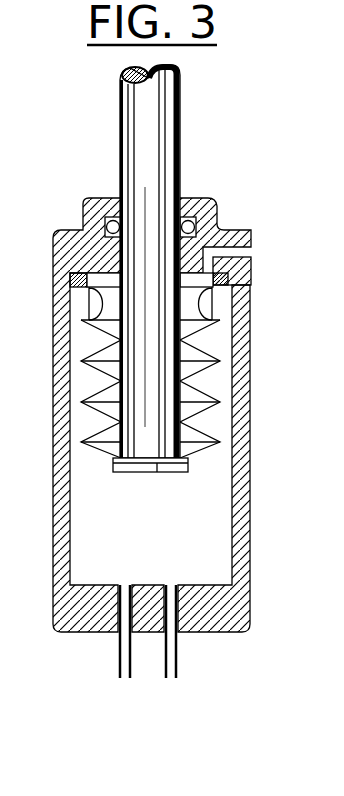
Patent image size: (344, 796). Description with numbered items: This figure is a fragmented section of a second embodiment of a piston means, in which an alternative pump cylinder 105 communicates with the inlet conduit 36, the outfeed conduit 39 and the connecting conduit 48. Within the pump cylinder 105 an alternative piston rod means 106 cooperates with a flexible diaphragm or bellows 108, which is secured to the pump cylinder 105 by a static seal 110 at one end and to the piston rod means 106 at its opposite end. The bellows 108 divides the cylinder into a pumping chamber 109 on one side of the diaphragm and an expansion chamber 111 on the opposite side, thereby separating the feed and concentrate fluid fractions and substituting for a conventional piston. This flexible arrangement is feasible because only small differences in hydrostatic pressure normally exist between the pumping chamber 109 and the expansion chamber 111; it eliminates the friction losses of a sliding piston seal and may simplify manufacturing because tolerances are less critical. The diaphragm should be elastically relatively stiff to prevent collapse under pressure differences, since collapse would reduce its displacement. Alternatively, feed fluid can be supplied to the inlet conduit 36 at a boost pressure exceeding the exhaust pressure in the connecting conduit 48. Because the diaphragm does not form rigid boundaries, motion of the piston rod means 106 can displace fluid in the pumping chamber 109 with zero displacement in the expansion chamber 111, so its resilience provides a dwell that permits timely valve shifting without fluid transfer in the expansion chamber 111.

The pump cylinder 105 is at (203, 128).
The piston rod means 106 is at (120, 99).
The connecting conduit 48 is at (237, 253).
The static seal 110 is at (233, 275).
The expansion chamber 111 is at (200, 313).
The flexible diaphragm or bellows 108 is at (188, 461).
The pumping chamber 109 is at (207, 523).
The inlet conduit 36 is at (118, 658).
The outfeed conduit 39 is at (178, 650).